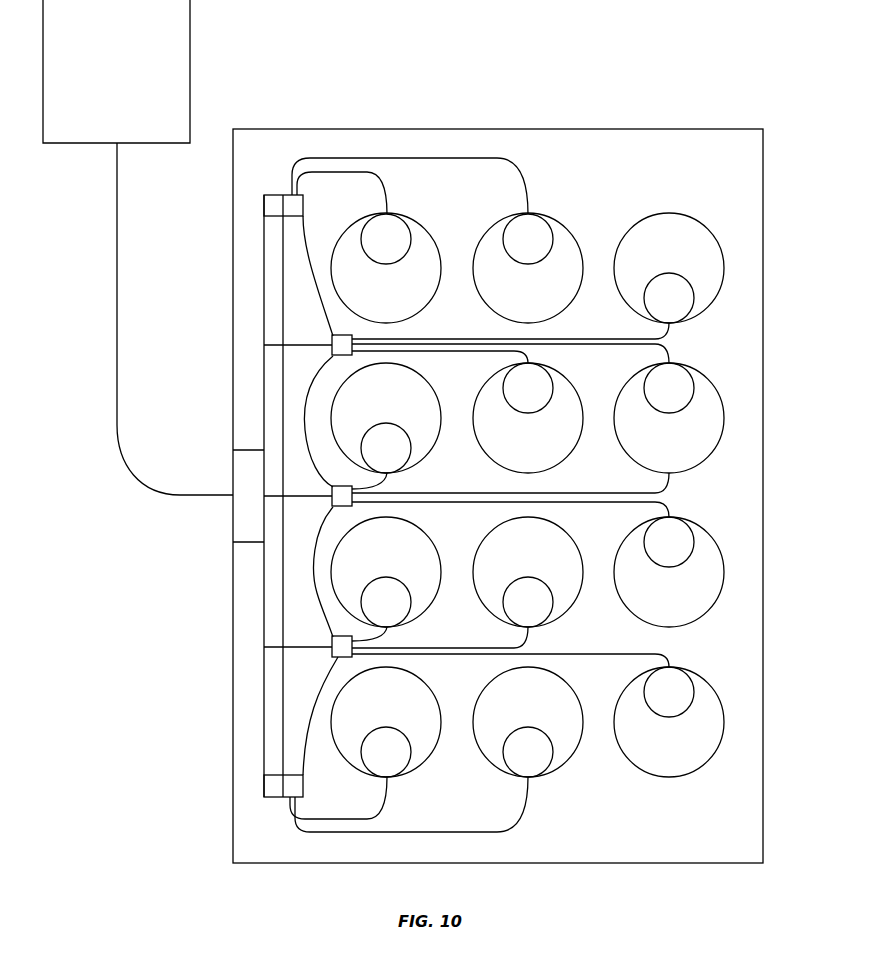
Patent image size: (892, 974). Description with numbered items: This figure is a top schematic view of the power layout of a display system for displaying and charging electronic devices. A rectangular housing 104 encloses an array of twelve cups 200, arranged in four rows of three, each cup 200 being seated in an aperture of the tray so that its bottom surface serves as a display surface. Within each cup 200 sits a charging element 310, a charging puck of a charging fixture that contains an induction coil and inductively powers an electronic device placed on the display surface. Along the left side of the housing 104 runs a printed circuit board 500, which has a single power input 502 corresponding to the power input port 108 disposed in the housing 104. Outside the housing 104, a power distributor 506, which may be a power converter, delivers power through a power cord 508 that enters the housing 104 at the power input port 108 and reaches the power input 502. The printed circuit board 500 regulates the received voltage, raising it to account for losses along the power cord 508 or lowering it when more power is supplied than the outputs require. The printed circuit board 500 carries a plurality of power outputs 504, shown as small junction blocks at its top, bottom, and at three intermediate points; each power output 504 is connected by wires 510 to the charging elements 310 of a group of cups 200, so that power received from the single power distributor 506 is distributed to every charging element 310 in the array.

The housing 104 is at (747, 128).
The power input port 108 is at (245, 504).
The cup 200 is at (668, 213).
The charging element 310 is at (393, 228).
The printed circuit board 500 is at (263, 382).
The power input 502 is at (275, 500).
The power outputs 504 is at (272, 205).
The power distributor 506 is at (190, 0).
The power cord 508 is at (117, 234).
The wires 510 is at (335, 172).